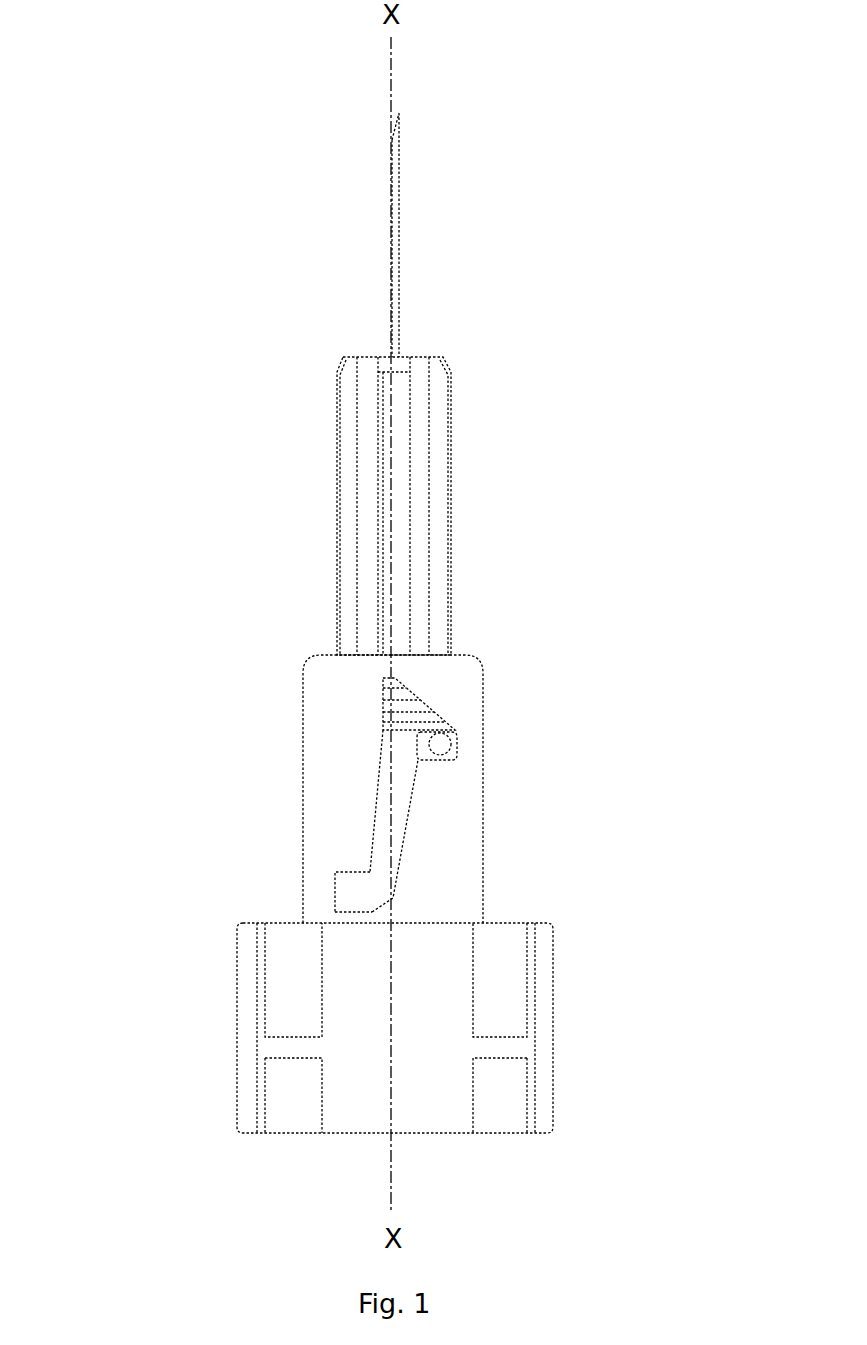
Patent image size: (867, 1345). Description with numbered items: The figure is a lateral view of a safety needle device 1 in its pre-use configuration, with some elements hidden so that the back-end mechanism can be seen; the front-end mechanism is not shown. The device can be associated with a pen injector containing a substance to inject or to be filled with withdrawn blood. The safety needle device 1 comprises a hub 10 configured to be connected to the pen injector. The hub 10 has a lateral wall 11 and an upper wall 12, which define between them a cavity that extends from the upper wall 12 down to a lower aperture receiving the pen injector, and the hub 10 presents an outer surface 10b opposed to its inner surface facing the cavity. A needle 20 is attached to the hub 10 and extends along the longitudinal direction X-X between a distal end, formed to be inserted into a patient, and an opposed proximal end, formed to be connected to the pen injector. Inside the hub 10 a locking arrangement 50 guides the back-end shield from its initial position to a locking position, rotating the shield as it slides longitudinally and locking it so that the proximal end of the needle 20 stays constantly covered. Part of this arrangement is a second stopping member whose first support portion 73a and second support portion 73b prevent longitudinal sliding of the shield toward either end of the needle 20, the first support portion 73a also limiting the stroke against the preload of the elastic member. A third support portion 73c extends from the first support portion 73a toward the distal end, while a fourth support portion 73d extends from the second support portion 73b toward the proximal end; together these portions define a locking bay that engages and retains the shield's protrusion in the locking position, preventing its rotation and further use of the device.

The safety needle device 1 is at (170, 284).
The hub 10 is at (287, 623).
The outer surface 10b is at (483, 835).
The lateral wall 11 is at (328, 750).
The upper wall 12 is at (413, 655).
The needle 20 is at (387, 264).
The locking arrangement 50 is at (431, 826).
The first support portion 73a is at (352, 912).
The second support portion 73b is at (348, 868).
The third support portion 73c is at (373, 914).
The fourth support portion 73d is at (367, 872).